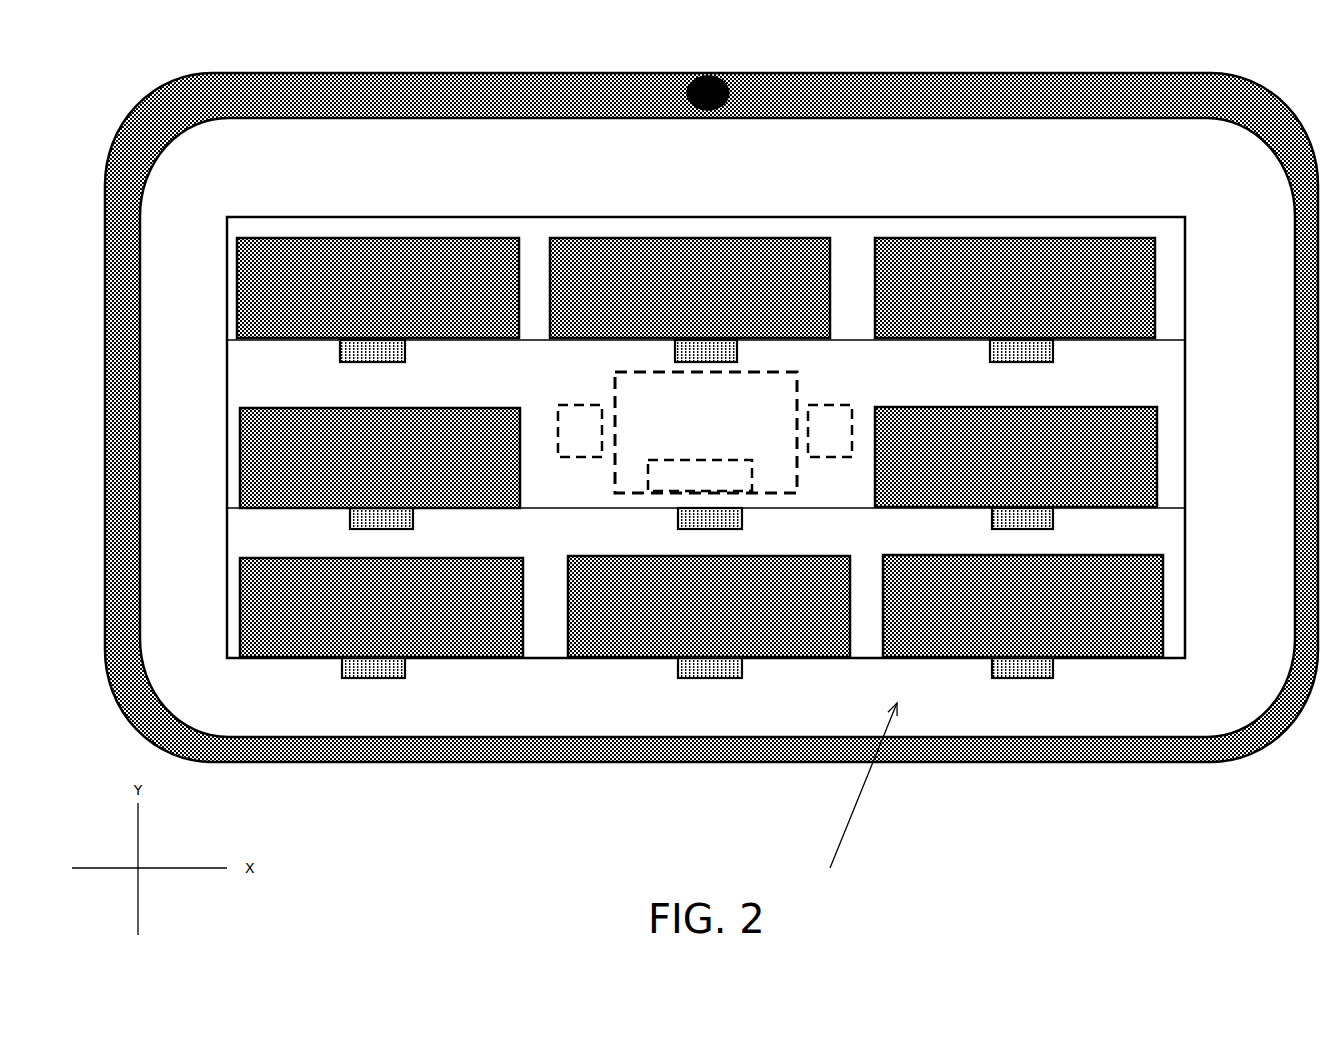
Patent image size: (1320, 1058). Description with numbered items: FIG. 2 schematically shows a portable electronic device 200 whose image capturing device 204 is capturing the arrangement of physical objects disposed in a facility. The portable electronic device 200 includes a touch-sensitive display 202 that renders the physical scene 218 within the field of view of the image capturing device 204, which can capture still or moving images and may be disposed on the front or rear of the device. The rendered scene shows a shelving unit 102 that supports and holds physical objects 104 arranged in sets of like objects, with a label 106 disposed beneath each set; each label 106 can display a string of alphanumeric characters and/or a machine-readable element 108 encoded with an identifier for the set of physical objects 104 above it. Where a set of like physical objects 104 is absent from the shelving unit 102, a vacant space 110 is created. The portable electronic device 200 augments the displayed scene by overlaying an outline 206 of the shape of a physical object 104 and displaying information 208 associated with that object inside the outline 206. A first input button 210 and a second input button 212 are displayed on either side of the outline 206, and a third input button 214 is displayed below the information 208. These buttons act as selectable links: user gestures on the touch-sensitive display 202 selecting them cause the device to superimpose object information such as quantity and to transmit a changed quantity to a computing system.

The portable electronic device 200 is at (480, 68).
The touch-sensitive display 202 is at (358, 185).
The image capturing device 204 is at (733, 90).
The shelving unit 102 is at (755, 217).
The physical objects 104 is at (238, 290).
The label 106 is at (677, 517).
The machine-readable element 108 is at (742, 518).
The vacant space 110 is at (545, 427).
The outline 206 is at (797, 393).
The information 208 is at (668, 393).
The first input button 210 is at (830, 460).
The second input button 212 is at (582, 460).
The third input button 214 is at (648, 472).
The physical scene 218 is at (853, 799).